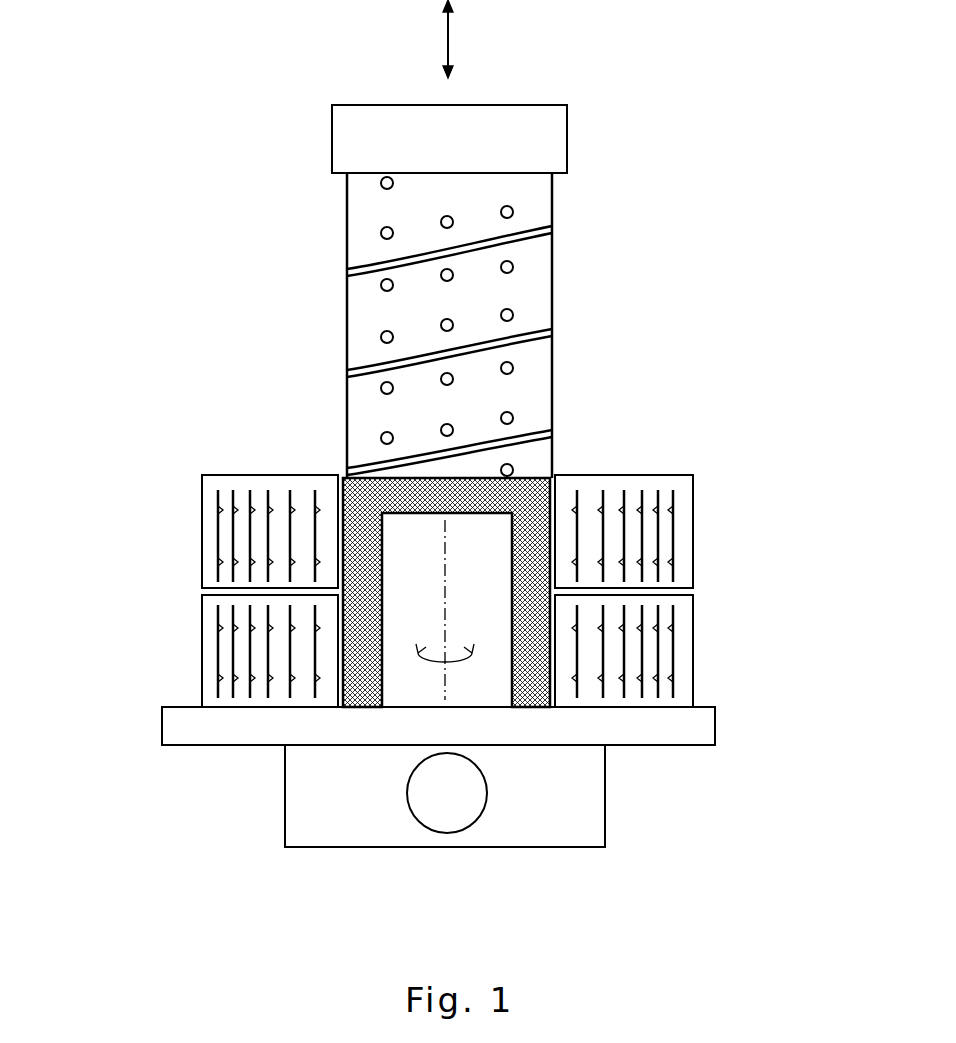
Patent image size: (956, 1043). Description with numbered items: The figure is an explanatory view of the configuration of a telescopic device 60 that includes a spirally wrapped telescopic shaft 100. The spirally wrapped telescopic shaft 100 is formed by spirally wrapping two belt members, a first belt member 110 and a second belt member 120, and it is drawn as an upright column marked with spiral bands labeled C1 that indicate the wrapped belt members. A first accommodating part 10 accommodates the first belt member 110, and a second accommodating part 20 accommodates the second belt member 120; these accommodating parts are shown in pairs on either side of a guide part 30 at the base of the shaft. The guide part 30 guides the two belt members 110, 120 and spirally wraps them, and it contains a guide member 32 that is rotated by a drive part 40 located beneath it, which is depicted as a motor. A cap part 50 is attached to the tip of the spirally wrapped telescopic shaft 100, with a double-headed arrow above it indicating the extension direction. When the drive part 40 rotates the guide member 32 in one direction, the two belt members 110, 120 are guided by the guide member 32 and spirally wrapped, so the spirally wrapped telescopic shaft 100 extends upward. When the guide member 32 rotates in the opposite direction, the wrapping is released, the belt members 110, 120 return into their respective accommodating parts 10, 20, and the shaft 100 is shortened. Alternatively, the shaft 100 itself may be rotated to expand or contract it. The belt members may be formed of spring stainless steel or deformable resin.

The first accommodating part 10 is at (203, 497).
The second accommodating part 20 is at (203, 608).
The guide part 30 is at (446, 592).
The guide member 32 is at (370, 588).
The drive part 40 is at (605, 805).
The cap part 50 is at (527, 105).
The telescopic device 60 is at (771, 101).
The spirally wrapped telescopic shaft 100 is at (552, 272).
The first belt member 110 is at (347, 322).
The second belt member 120 is at (218, 651).
The cutting band C1 is at (410, 254).